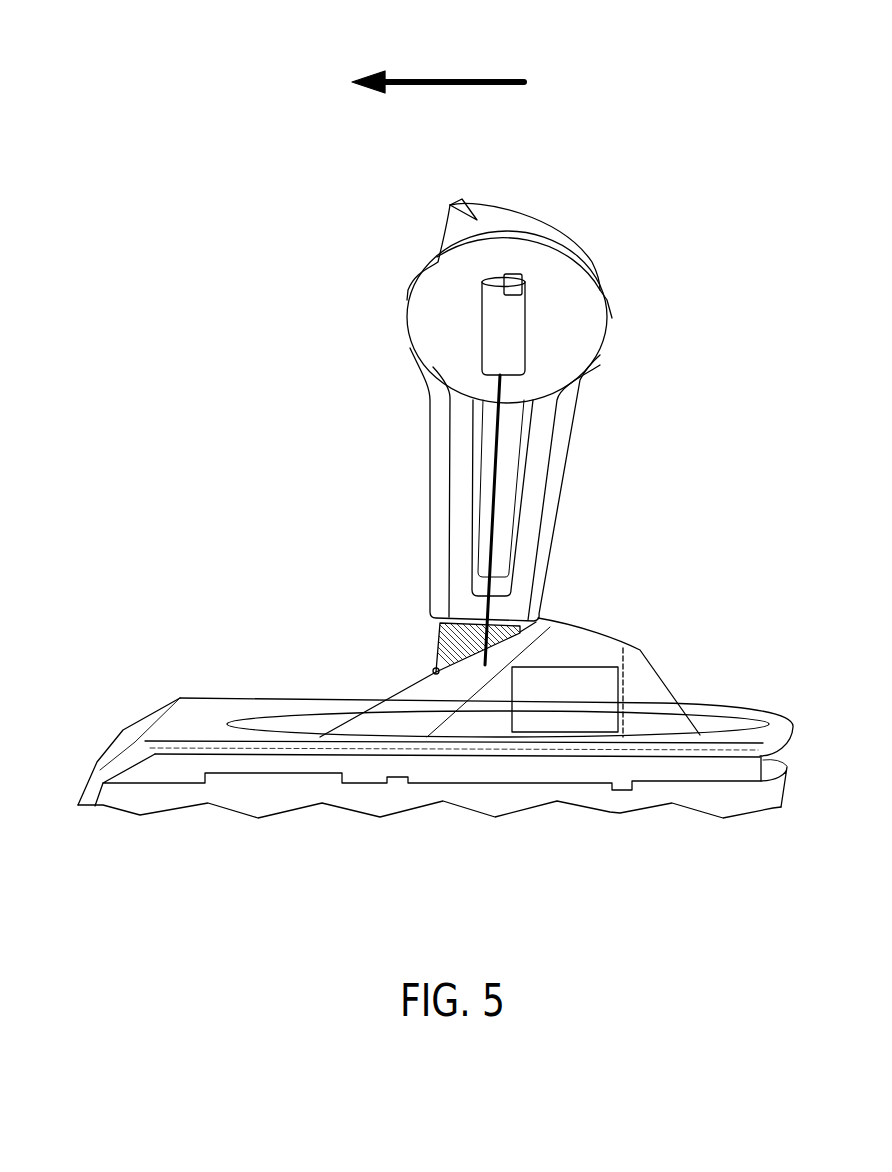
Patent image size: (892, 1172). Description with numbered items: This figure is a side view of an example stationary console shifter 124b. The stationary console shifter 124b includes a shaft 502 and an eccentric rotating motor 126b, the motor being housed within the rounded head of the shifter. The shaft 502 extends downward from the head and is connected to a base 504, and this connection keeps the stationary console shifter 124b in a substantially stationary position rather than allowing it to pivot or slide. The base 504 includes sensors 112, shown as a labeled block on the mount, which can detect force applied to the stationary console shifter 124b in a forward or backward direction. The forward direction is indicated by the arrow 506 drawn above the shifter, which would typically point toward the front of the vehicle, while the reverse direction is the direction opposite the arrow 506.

The arrow 506 is at (480, 80).
The stationary console shifter 124b is at (557, 230).
The eccentric rotating motor 126b is at (510, 315).
The shaft 502 is at (433, 648).
The base 504 is at (585, 652).
The sensors 112 is at (575, 722).